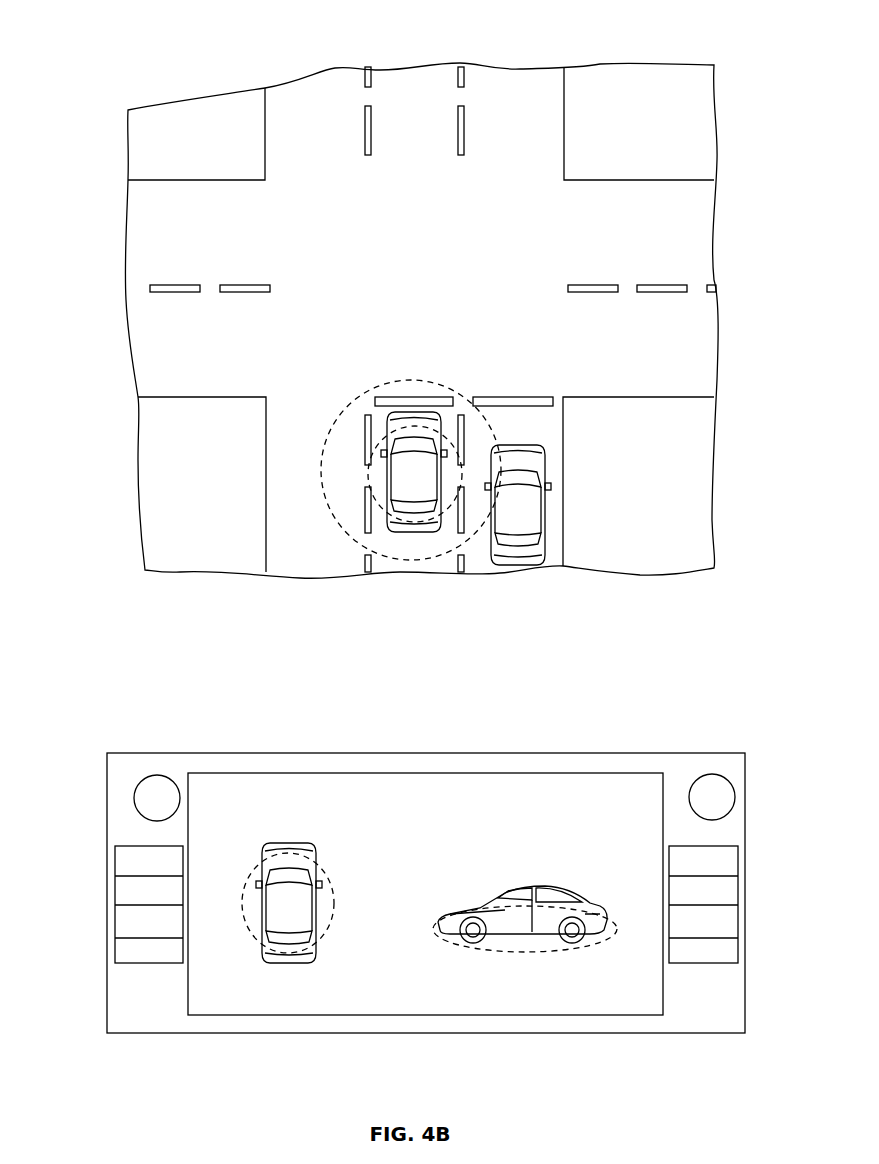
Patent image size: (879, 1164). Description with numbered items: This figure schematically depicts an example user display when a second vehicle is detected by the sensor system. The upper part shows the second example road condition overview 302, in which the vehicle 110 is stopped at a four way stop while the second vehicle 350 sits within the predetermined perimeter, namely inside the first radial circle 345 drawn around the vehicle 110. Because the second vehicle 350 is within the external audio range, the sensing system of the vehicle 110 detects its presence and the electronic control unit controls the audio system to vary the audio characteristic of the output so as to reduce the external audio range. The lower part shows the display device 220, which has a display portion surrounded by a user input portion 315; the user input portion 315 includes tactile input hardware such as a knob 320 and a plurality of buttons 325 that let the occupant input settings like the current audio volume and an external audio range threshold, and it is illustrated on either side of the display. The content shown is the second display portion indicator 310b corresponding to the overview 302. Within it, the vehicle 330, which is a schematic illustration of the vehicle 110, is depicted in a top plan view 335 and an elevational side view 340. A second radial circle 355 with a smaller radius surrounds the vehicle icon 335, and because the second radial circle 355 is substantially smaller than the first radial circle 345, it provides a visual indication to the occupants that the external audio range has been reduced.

The second example road condition overview 302 is at (703, 50).
The first radial circle 345 is at (460, 395).
The second radial circle 355 is at (418, 410).
The vehicle 110 is at (381, 470).
The second vehicle 350 is at (520, 457).
The display device 220 is at (416, 915).
The user input portion 315 is at (148, 977).
The second display portion indicator 310b is at (615, 785).
The knob 320 is at (145, 798).
The plurality of buttons 325 is at (113, 892).
The vehicle 330 is at (446, 895).
The top plan view 335 is at (293, 955).
The elevational side view 340 is at (547, 920).